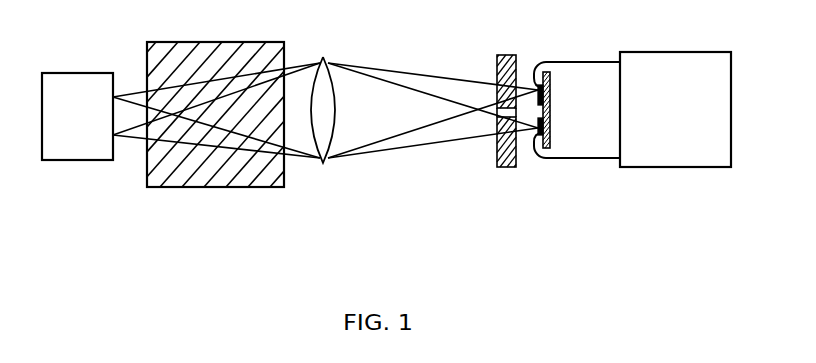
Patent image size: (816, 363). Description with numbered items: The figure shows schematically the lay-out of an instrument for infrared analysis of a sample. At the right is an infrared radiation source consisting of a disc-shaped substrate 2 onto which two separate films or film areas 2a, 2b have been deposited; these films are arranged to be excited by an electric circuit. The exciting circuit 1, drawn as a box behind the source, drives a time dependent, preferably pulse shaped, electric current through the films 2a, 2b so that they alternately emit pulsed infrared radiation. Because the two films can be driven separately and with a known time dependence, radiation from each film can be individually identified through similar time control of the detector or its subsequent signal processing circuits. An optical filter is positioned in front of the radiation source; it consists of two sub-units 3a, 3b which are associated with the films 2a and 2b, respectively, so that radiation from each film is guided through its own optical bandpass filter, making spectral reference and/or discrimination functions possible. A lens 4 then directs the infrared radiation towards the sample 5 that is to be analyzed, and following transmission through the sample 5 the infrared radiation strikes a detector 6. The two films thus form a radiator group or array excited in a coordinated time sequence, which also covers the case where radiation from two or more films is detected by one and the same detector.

The exciting circuit 1 is at (662, 167).
The disc-shaped substrate 2 is at (549, 118).
The film 2a is at (519, 134).
The film 2b is at (523, 70).
The filter sub-unit 3a is at (496, 148).
The filter sub-unit 3b is at (493, 68).
The lens 4 is at (336, 136).
The sample 5 is at (203, 187).
The detector 6 is at (67, 160).